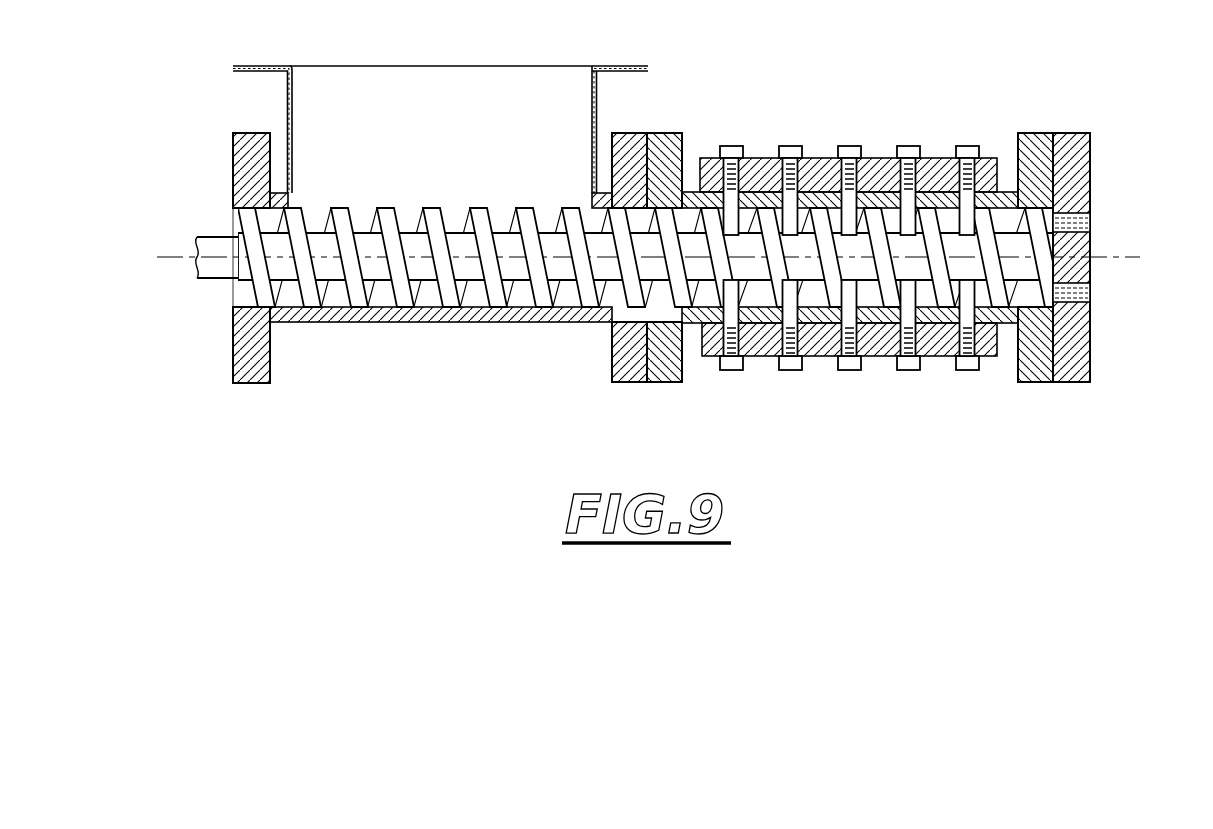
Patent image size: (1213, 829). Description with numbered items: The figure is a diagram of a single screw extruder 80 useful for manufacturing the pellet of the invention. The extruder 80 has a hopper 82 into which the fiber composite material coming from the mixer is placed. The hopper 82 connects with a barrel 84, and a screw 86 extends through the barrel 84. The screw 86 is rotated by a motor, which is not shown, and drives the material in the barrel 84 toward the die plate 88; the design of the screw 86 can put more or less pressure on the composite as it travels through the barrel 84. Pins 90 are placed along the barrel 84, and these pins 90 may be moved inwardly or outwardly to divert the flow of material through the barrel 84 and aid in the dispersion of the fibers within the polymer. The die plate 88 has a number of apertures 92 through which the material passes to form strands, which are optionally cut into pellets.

The extruder 80 is at (786, 75).
The hopper 82 is at (597, 115).
The barrel 84 is at (440, 322).
The screw 86 is at (467, 207).
The die plate 88 is at (1068, 133).
The pins 90 is at (908, 146).
The apertures 92 is at (1092, 223).